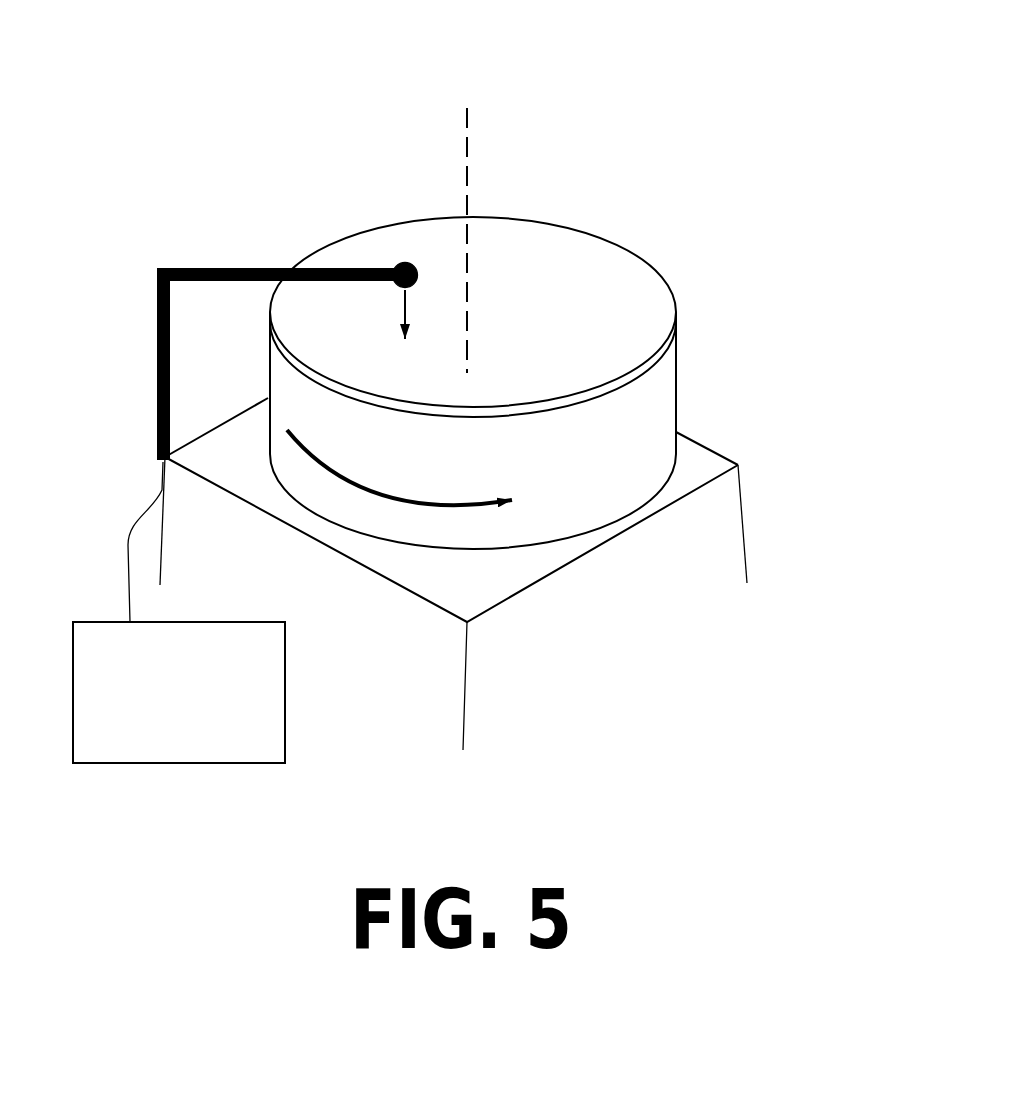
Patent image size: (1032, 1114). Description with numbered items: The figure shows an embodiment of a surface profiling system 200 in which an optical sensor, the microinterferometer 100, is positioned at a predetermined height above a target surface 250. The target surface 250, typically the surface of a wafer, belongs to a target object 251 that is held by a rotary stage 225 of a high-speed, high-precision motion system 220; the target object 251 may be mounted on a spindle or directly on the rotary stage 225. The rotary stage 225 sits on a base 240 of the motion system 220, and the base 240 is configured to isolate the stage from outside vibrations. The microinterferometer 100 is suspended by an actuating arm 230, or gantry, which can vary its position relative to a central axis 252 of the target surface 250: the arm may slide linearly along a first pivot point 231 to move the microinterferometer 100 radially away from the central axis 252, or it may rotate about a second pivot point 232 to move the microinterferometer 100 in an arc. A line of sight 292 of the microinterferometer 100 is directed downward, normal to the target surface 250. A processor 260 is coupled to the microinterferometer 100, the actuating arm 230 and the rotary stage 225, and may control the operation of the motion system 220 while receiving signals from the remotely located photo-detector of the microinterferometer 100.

The surface profiling system 200 is at (336, 48).
The microinterferometer 100 is at (419, 261).
The motion system 220 is at (764, 480).
The rotary stage 225 is at (666, 396).
The actuating arm 230 is at (219, 257).
The first pivot point 231 is at (149, 272).
The second pivot point 232 is at (146, 453).
The base 240 is at (652, 606).
The target surface 250 is at (598, 273).
The target object 251 is at (677, 342).
The central axis 252 is at (458, 127).
The processor 260 is at (265, 750).
The line of sight 292 is at (389, 298).